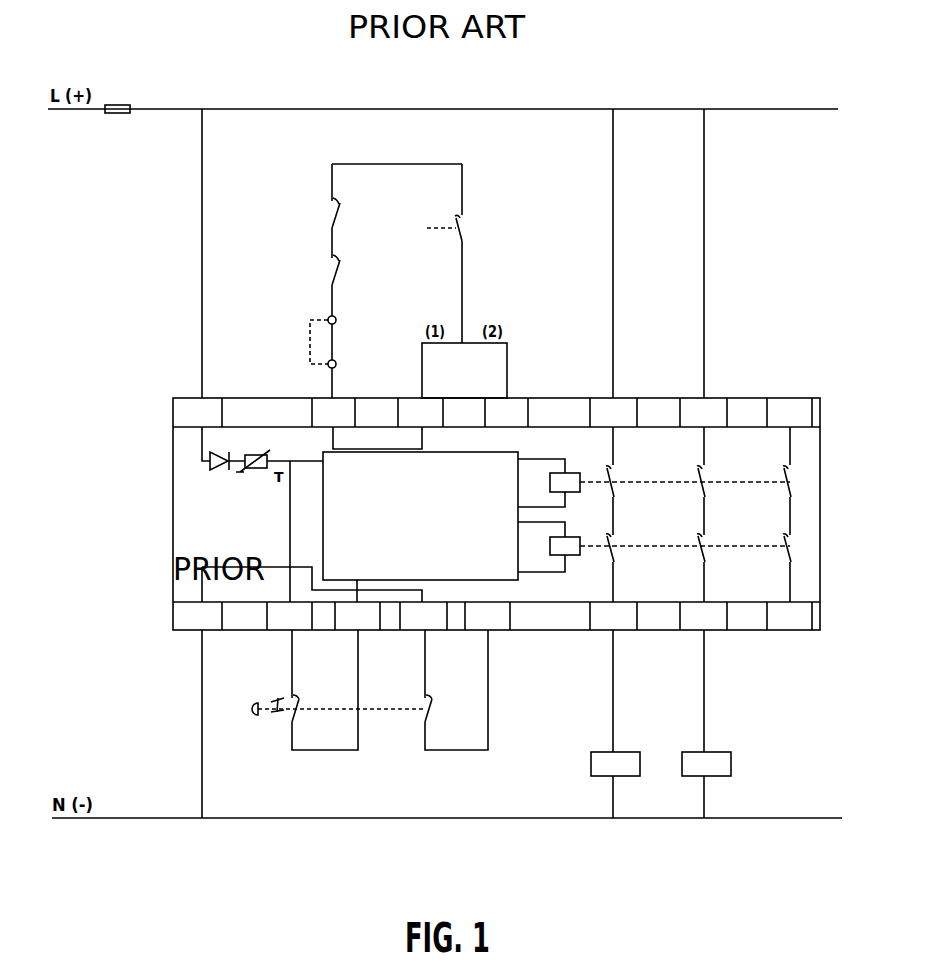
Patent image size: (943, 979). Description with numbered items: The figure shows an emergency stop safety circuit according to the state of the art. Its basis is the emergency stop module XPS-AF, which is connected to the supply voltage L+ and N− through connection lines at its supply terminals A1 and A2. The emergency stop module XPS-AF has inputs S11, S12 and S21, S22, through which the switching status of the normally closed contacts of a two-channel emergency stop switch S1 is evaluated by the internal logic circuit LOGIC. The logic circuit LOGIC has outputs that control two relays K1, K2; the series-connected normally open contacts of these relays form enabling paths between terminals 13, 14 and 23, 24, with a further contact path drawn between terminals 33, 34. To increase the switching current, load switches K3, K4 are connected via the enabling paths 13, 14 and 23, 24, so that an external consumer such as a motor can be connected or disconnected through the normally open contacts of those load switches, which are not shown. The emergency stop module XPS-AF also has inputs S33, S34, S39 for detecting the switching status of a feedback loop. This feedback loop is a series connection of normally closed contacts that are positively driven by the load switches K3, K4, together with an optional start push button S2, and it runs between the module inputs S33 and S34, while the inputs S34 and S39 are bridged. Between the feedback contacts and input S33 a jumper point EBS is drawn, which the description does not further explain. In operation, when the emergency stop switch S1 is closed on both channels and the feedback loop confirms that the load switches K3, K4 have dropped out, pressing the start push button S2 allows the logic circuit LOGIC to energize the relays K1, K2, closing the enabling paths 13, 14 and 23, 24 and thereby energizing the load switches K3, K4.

The emergency stop module XPS-AF is at (496, 514).
The logic circuit LOGIC is at (420, 516).
The supply connection A1 is at (206, 412).
The supply connection A2 is at (206, 616).
The input S11 is at (289, 616).
The input S12 is at (357, 616).
The input S21 is at (423, 616).
The input S22 is at (487, 616).
The input S33 is at (333, 412).
The input S34 is at (420, 412).
The input S39 is at (506, 412).
The enabling path terminal 13 is at (613, 412).
The enabling path terminal 14 is at (613, 616).
The enabling path terminal 23 is at (703, 412).
The enabling path terminal 24 is at (703, 616).
The enabling path terminal 33 is at (789, 412).
The enabling path terminal 34 is at (789, 616).
The relay K1 is at (654, 481).
The relay K2 is at (654, 562).
The load switch K3 is at (601, 762).
The load switch K4 is at (693, 762).
The two-channel emergency stop switch S1 is at (370, 690).
The start push button S2 is at (433, 253).
The EBS jumper EBS is at (338, 357).